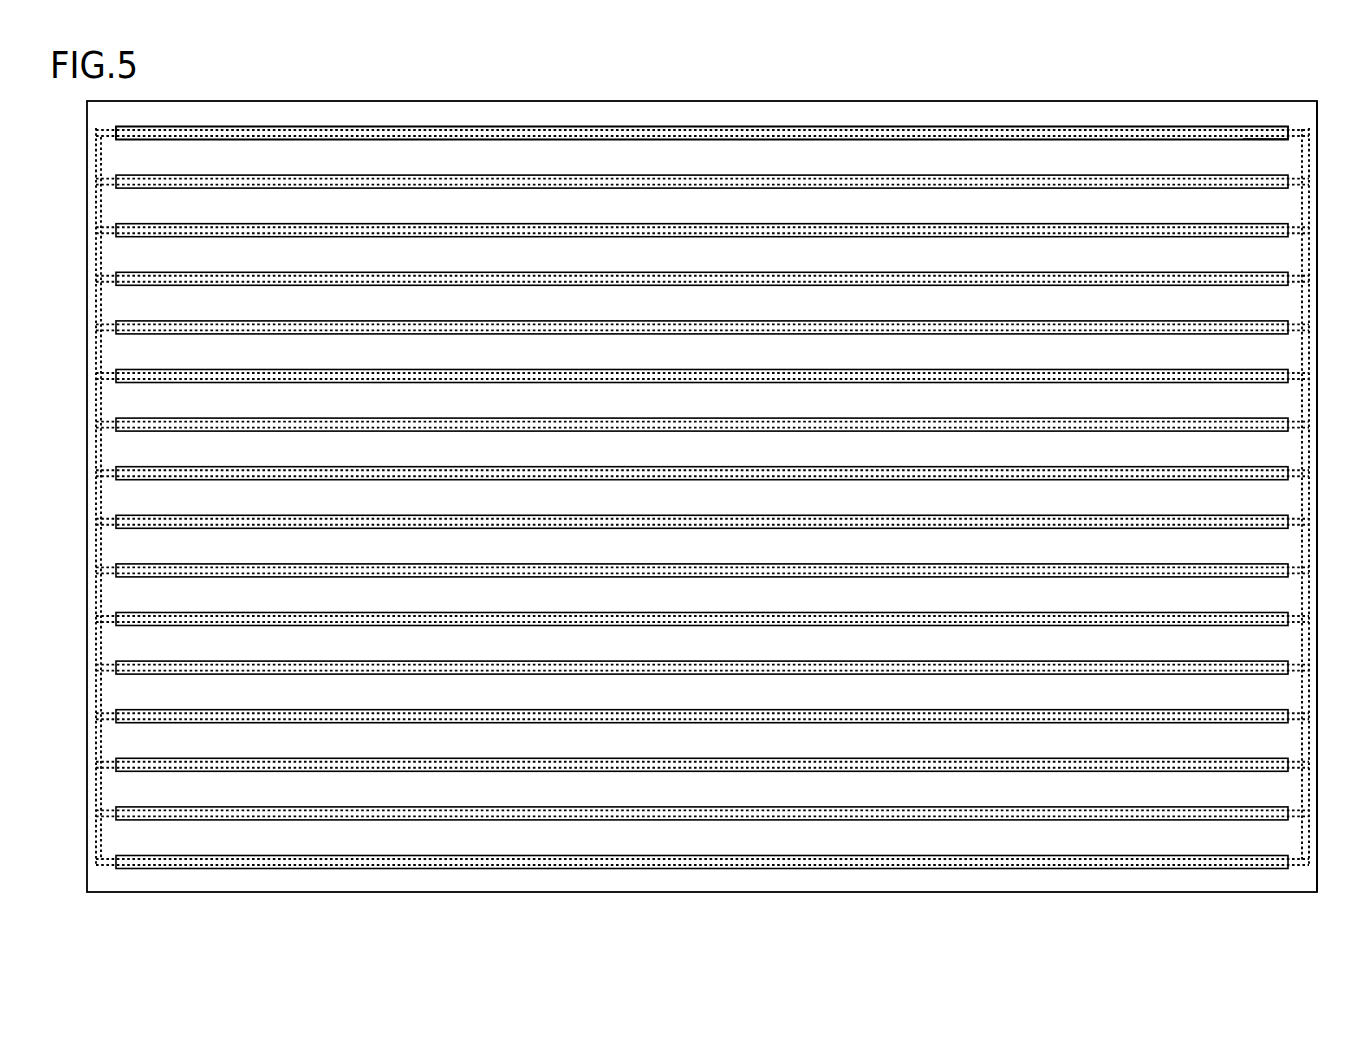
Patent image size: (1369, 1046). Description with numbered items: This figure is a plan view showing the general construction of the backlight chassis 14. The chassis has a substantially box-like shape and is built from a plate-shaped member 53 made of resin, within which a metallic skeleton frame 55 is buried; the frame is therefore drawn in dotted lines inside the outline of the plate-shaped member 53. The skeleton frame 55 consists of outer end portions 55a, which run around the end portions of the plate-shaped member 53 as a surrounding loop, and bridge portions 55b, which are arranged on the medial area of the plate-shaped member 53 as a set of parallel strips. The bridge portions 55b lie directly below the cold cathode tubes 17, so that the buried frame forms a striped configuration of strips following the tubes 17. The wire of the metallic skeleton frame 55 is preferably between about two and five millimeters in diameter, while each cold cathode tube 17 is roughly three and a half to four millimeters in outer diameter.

The backlight chassis 14 is at (1257, 102).
The cold cathode tube 17 is at (1243, 141).
The plate-shaped member 53 is at (1318, 787).
The metallic skeleton frame 55 is at (1226, 128).
The outer end portion 55a is at (90, 478).
The bridge portion 55b is at (722, 222).